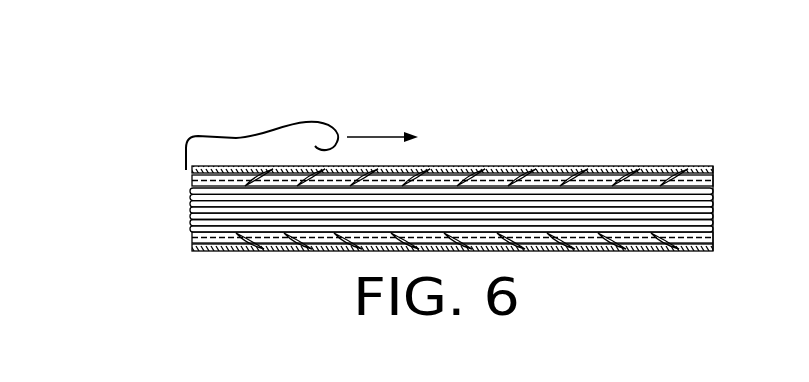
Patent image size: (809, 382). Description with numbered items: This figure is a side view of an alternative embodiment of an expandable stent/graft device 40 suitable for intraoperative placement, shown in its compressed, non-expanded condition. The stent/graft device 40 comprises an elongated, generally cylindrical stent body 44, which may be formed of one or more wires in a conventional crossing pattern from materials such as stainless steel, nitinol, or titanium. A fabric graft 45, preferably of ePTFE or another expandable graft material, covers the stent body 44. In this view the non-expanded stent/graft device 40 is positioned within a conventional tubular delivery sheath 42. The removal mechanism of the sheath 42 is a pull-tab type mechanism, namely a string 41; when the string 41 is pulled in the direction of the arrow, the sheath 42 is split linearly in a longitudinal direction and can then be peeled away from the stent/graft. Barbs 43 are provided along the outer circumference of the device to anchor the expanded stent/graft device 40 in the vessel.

The stent/graft device 40 is at (446, 156).
The string 41 is at (333, 126).
The delivery sheath 42 is at (607, 167).
The barbs 43 is at (560, 171).
The stent body 44 is at (192, 201).
The fabric graft 45 is at (713, 172).